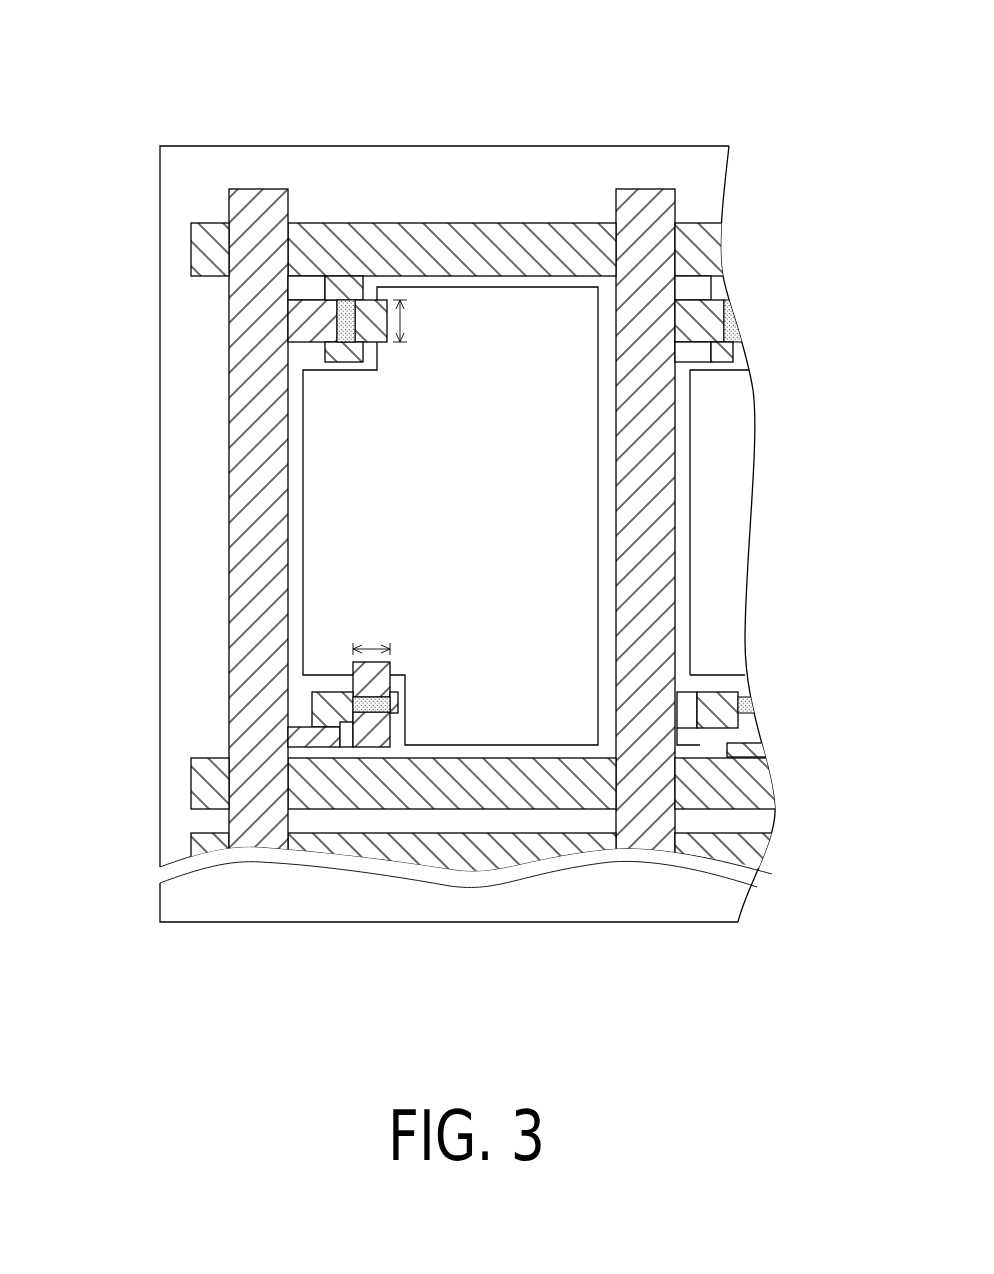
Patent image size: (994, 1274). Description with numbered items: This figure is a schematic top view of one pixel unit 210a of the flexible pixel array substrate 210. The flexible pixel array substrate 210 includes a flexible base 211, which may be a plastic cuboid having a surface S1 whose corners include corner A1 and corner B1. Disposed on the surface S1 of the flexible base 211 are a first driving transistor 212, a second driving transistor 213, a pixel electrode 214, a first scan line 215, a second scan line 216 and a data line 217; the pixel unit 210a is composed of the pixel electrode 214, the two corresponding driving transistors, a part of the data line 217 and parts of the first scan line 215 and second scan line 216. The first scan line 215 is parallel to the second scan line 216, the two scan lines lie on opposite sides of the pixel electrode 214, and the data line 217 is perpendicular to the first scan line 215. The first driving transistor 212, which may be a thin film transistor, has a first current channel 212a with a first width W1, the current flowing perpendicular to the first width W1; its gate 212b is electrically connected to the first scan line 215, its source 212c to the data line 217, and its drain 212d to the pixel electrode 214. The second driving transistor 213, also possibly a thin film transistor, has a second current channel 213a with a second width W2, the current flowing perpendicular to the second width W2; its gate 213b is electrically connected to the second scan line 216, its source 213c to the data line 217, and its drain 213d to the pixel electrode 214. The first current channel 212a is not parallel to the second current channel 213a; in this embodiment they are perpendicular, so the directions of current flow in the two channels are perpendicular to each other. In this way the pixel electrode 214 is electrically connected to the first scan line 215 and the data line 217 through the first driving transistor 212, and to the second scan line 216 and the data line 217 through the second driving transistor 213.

The flexible pixel array substrate 210 is at (866, 931).
The pixel unit 210a is at (546, 408).
The flexible base 211 is at (270, 163).
The first driving transistor 212 is at (259, 231).
The first current channel 212a is at (345, 300).
The gate 212b is at (338, 355).
The source 212c is at (302, 322).
The drain 212d is at (372, 350).
The second driving transistor 213 is at (308, 815).
The second current channel 213a is at (352, 705).
The gate 213b is at (398, 722).
The source 213c is at (363, 730).
The drain 213d is at (355, 670).
The pixel electrode 214 is at (545, 300).
The first scan line 215 is at (212, 228).
The second scan line 216 is at (197, 780).
The data line 217 is at (243, 480).
The corner A1 is at (157, 146).
The corner B1 is at (157, 926).
The surface S1 is at (697, 170).
The first width W1 is at (400, 321).
The second width W2 is at (374, 648).